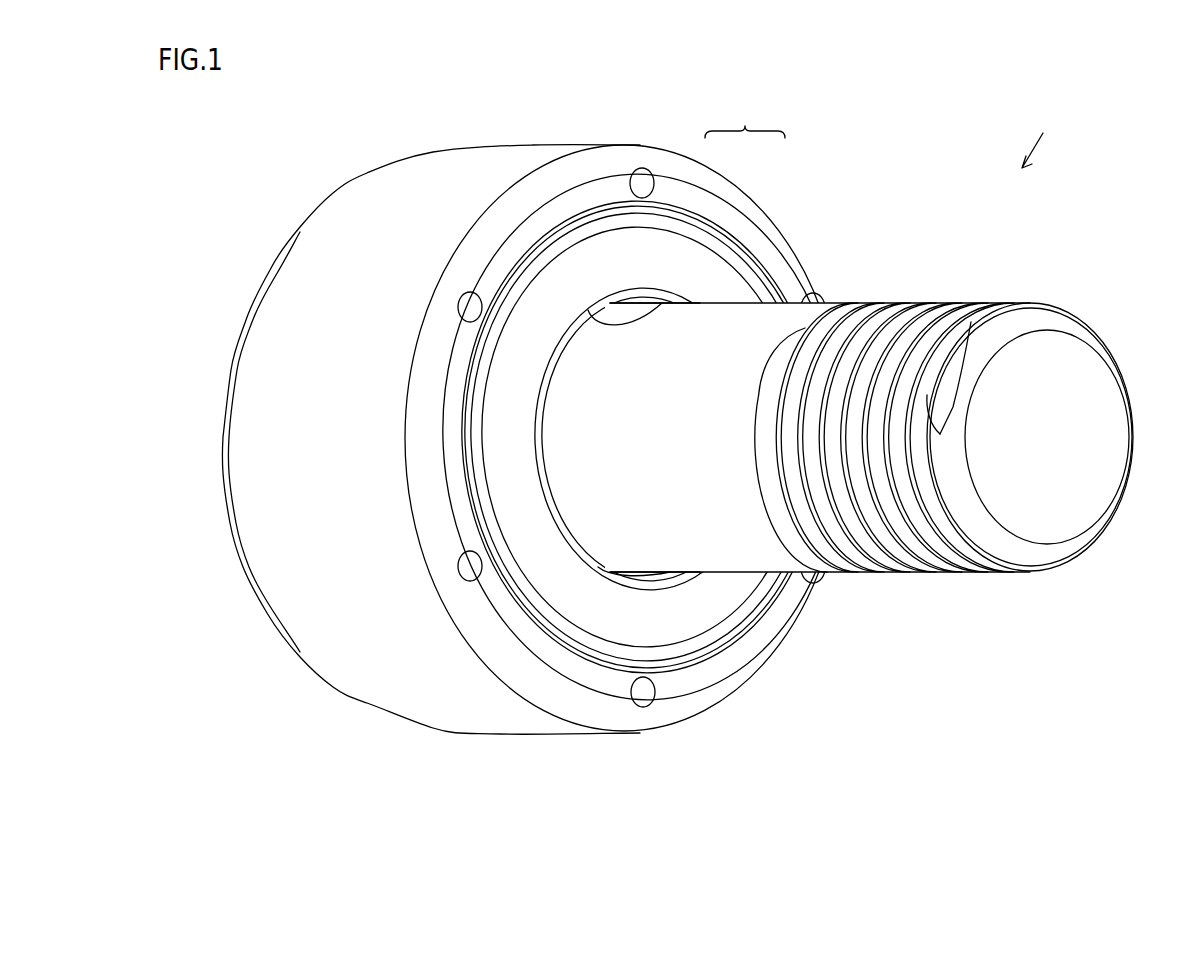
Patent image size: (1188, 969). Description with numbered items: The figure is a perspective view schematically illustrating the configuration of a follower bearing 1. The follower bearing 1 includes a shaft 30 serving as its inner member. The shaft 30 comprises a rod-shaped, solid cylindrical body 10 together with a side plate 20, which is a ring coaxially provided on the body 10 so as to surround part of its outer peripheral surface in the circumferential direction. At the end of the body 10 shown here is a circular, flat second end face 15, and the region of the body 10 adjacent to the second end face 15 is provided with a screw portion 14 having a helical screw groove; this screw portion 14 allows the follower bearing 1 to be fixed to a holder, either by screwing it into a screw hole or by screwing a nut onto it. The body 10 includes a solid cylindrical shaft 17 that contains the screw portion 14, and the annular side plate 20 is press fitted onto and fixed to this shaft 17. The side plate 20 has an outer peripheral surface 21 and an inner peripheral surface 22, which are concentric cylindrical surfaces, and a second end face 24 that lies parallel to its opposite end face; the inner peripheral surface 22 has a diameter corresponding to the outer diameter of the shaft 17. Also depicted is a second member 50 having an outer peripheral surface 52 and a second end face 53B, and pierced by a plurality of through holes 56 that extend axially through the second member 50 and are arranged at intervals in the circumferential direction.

The follower bearing 1 is at (1036, 127).
The body 10 is at (727, 320).
The screw portion 14 is at (923, 320).
The second end face 15 is at (1077, 432).
The shaft 17 is at (771, 314).
The side plate 20 is at (697, 252).
The outer peripheral surface 21 is at (577, 218).
The inner peripheral surface 22 is at (648, 323).
The second end face 24 is at (749, 282).
The shaft 30 is at (745, 117).
The second member 50 is at (462, 157).
The outer peripheral surface 52 is at (533, 733).
The second end face 53B is at (717, 666).
The through holes 56 is at (635, 186).